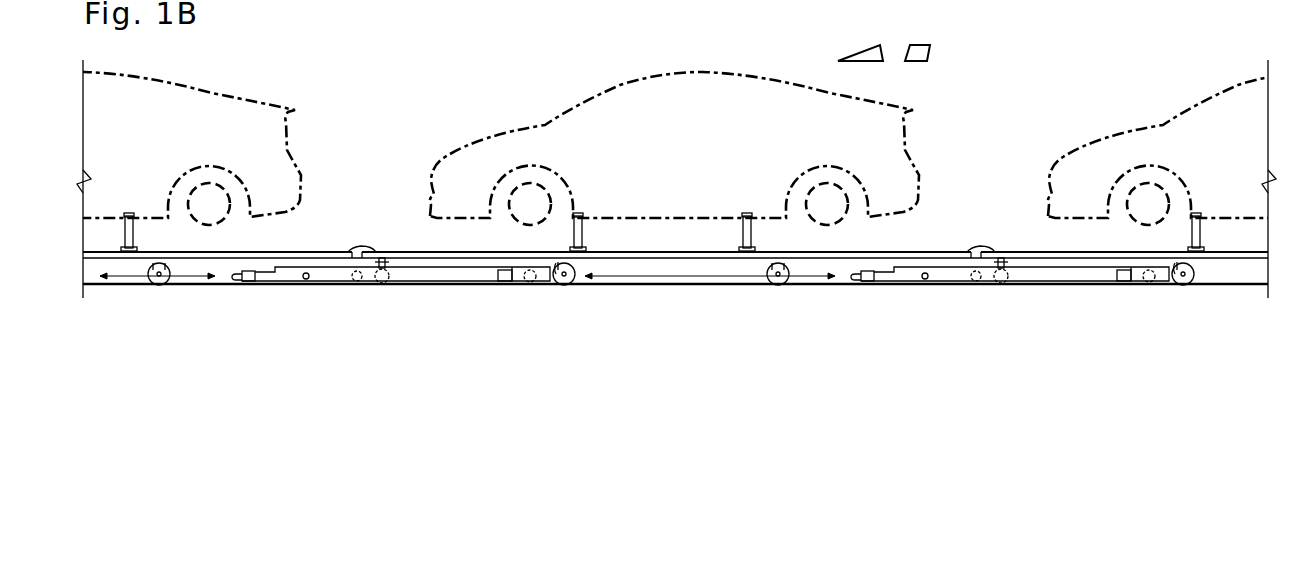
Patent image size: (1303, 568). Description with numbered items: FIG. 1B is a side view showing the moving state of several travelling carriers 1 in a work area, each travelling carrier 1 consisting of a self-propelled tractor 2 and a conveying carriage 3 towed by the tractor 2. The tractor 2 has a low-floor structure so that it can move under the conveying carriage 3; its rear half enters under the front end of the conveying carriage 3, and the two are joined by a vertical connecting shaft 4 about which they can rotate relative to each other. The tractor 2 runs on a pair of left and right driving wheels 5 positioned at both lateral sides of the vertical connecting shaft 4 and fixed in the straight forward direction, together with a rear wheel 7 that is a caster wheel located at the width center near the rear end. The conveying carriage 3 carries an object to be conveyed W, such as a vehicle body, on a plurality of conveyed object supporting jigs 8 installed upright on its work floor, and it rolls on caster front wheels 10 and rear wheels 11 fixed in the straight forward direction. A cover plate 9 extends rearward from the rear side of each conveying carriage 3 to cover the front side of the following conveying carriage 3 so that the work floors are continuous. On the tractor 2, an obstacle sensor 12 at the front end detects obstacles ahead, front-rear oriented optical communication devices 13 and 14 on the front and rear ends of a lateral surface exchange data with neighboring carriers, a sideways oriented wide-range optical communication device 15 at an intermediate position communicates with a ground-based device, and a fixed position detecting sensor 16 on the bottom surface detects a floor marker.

The object to be conveyed W is at (238, 92).
The travelling carrier 1 is at (93, 252).
The self-propelled tractor 2 is at (450, 268).
The conveying carriage 3 is at (292, 250).
The vertical connecting shaft 4 is at (386, 260).
The driving wheels 5 is at (382, 284).
The rear wheel 7 is at (530, 283).
The conveyed object supporting jigs 8 is at (132, 213).
The cover plate 9 is at (362, 247).
The front wheels 10 is at (566, 286).
The rear wheels 11 is at (158, 285).
The obstacle sensor 12 is at (233, 281).
The front-rear oriented optical communication device 13 is at (250, 283).
The front-rear oriented optical communication device 14 is at (505, 283).
The sideways oriented wide-range optical communication device 15 is at (307, 280).
The fixed position detecting sensor 16 is at (357, 283).